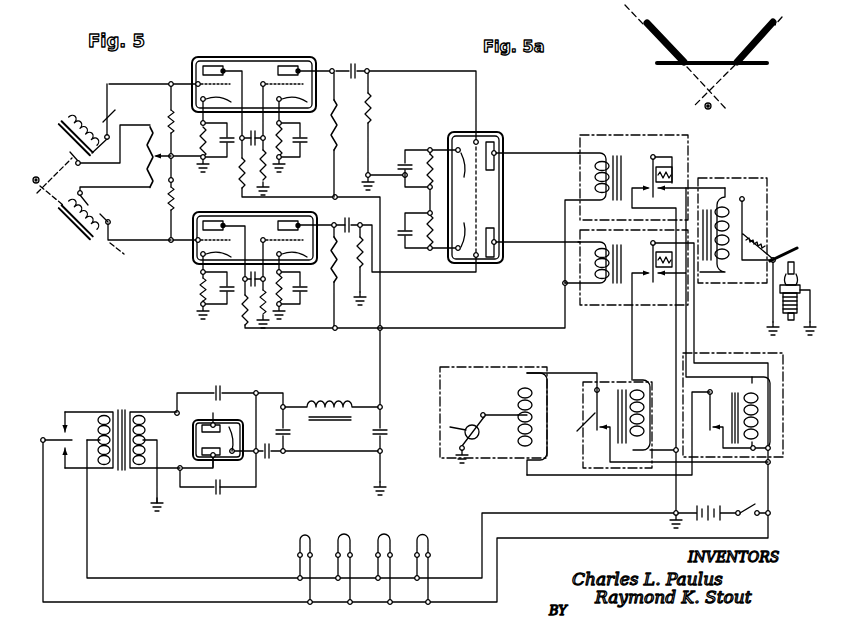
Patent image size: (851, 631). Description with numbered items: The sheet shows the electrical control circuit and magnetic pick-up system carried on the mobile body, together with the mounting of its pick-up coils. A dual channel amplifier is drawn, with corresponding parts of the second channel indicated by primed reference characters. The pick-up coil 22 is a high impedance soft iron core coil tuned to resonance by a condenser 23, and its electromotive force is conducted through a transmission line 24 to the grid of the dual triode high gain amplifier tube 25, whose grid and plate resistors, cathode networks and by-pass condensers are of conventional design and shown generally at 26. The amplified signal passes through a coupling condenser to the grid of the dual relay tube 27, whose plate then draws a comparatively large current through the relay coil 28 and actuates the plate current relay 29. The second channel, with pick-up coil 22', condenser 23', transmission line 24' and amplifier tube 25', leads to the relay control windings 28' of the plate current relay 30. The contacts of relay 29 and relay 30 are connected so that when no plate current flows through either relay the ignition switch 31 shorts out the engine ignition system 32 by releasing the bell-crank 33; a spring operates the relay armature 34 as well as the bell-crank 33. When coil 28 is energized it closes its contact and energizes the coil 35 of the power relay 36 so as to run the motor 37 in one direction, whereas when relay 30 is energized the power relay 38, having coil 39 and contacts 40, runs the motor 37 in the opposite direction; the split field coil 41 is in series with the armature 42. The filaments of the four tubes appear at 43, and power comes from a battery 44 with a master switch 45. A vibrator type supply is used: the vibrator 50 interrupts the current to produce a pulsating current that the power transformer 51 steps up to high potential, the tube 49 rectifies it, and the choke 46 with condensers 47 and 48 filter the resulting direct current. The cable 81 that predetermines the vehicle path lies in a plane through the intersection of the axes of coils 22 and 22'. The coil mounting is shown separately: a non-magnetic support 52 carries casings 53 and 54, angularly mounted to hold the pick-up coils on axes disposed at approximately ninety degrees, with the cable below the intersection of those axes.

In FIG. 5, the pick-up coil 22 is at (93, 124).
In FIG. 5A, the pick-up coil 22 is at (671, 40).
In FIG. 5, the pick-up coil 22' is at (119, 229).
In FIG. 5A, the pick-up coil 22' is at (768, 42).
In FIG. 5, the condenser 23 is at (91, 109).
In FIG. 5, the condenser 23' is at (99, 268).
In FIG. 5, the transmission line 24 is at (125, 128).
In FIG. 5, the transmission line 24' is at (152, 258).
In FIG. 5, the dual triode high gain amplifier tube 25 is at (254, 71).
In FIG. 5, the dual triode high gain amplifier tube 25' is at (255, 228).
In FIG. 5, the grid and plate resistors, cathode networks and by-pass condensers 26 is at (338, 117).
In FIG. 5, the dual relay tube 27 is at (499, 131).
In FIG. 5, the relay coil 28 is at (579, 218).
In FIG. 5, the relay control windings 28' is at (570, 264).
In FIG. 5, the plate current relay 29 is at (617, 135).
In FIG. 5, the plate current relay 30 is at (619, 306).
In FIG. 5, the ignition switch 31 is at (716, 177).
In FIG. 5, the engine ignition system 32 is at (776, 307).
In FIG. 5, the bell-crank 33 is at (788, 246).
In FIG. 5, the relay armature 34 is at (747, 210).
In FIG. 5, the coil 35 is at (766, 415).
In FIG. 5, the power relay 36 is at (748, 353).
In FIG. 5, the motor 37 is at (490, 362).
In FIG. 5, the power relay 38 is at (608, 380).
In FIG. 5, the coil 39 is at (647, 395).
In FIG. 5, the contacts 40 is at (594, 418).
In FIG. 5, the split field coil 41 is at (518, 400).
In FIG. 5, the armature 42 is at (450, 427).
In FIG. 5, the filaments 43 is at (362, 525).
In FIG. 5, the battery 44 is at (703, 510).
In FIG. 5, the master switch 45 is at (764, 506).
In FIG. 5, the choke 46 is at (336, 404).
In FIG. 5, the condenser 47 is at (392, 438).
In FIG. 5, the condenser 48 is at (295, 437).
In FIG. 5, the tube 49 is at (233, 463).
In FIG. 5, the vibrator 50 is at (54, 422).
In FIG. 5, the power transformer 51 is at (122, 409).
In FIG. 5A, the non-magnetic support 52 is at (713, 72).
In FIG. 5A, the casing 53 is at (652, 49).
In FIG. 5A, the casing 54 is at (743, 46).
In FIG. 5, the cable 81 is at (77, 198).
In FIG. 5A, the cable 81 is at (710, 110).